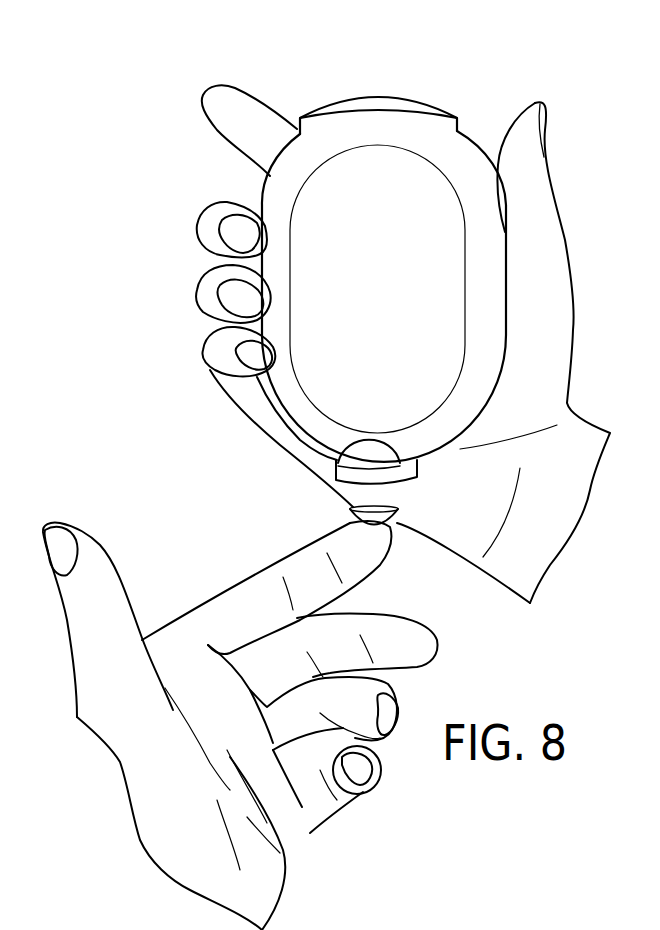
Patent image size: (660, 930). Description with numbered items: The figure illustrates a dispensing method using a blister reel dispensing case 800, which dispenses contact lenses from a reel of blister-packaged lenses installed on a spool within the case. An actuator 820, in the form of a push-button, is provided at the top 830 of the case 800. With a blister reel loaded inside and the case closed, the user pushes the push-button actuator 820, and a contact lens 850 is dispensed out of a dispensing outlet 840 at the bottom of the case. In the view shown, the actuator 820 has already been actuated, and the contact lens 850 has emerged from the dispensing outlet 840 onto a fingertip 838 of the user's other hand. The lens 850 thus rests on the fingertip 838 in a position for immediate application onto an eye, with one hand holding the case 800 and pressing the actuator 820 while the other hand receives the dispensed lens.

The blister reel dispensing case 800 is at (478, 210).
The actuator 820 is at (385, 97).
The top 830 is at (292, 156).
The fingertip 838 is at (373, 543).
The dispensing outlet 840 is at (340, 478).
The contact lens 850 is at (352, 512).